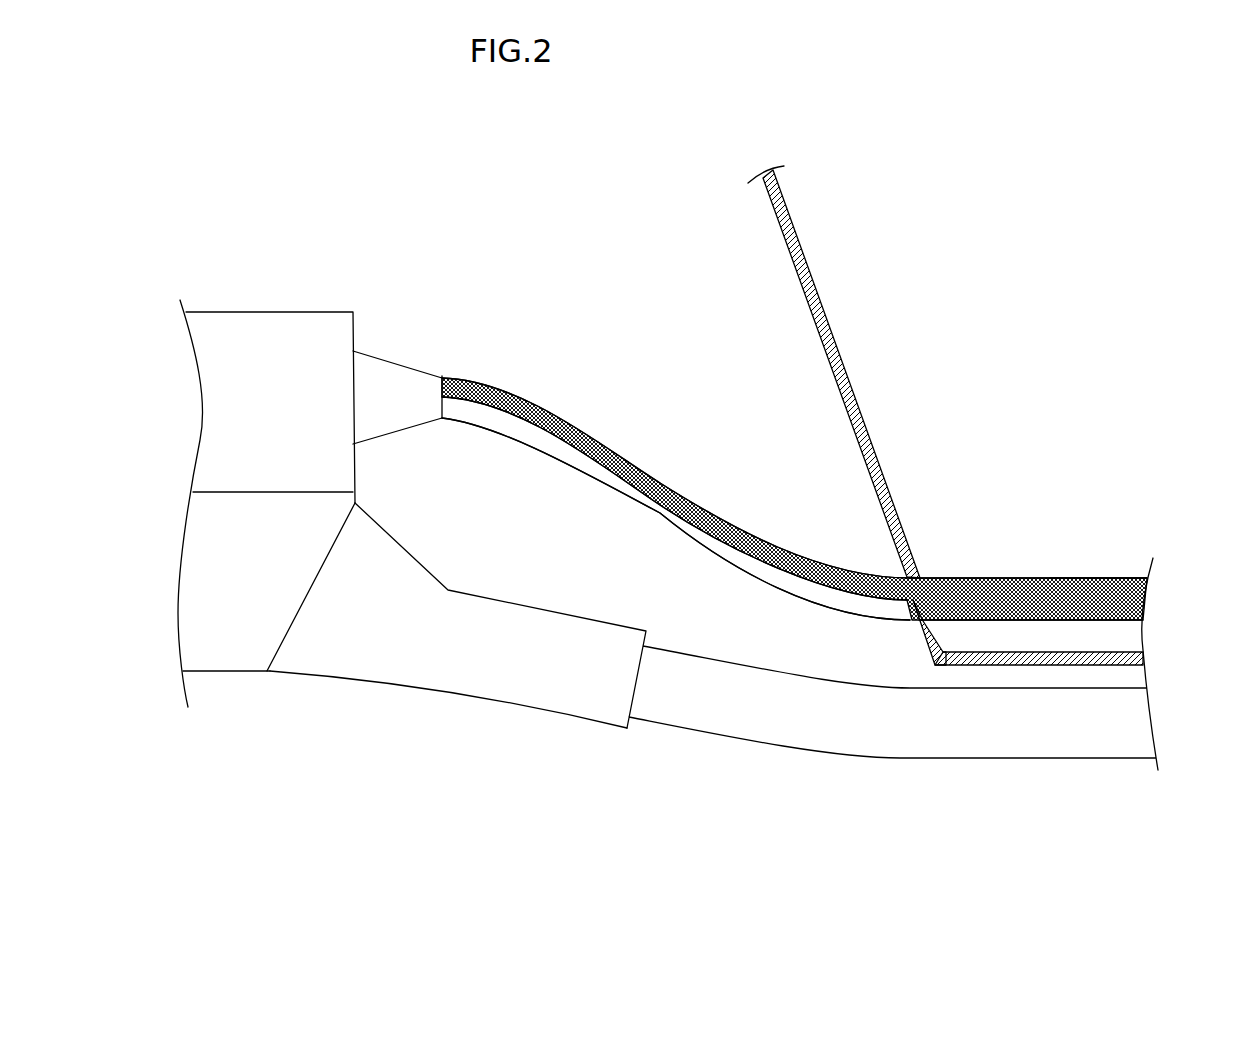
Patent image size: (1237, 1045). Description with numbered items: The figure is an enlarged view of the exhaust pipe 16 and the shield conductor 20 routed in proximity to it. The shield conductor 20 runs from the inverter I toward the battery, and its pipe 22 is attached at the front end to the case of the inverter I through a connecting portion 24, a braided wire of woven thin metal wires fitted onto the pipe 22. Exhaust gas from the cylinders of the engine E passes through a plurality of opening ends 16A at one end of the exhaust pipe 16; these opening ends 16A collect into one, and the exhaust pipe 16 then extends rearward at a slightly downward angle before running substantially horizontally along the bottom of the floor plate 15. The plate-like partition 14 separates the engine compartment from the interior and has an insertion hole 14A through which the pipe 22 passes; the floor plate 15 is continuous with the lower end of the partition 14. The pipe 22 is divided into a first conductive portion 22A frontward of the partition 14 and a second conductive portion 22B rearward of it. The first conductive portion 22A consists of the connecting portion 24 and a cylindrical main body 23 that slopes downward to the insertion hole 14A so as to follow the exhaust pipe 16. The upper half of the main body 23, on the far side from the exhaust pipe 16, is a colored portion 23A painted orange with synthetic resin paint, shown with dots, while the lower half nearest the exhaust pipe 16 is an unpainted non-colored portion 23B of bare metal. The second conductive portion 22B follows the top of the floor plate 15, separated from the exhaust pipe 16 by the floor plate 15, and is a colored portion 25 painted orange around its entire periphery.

The inverter I is at (270, 312).
The engine E is at (229, 672).
The partition 14 is at (842, 367).
The insertion hole 14A is at (920, 576).
The floor plate 15 is at (1123, 652).
The exhaust pipe 16 is at (863, 760).
The opening ends 16A is at (298, 608).
The shield conductor 20 is at (614, 309).
The pipe 22 is at (794, 481).
The first conductive portion 22A is at (620, 437).
The second conductive portion 22B is at (1020, 578).
The main body 23 is at (757, 583).
The colored portion 23A is at (803, 553).
The non-colored portion 23B is at (735, 548).
The connecting portion 24 is at (393, 360).
The colored portion 25 is at (1095, 590).